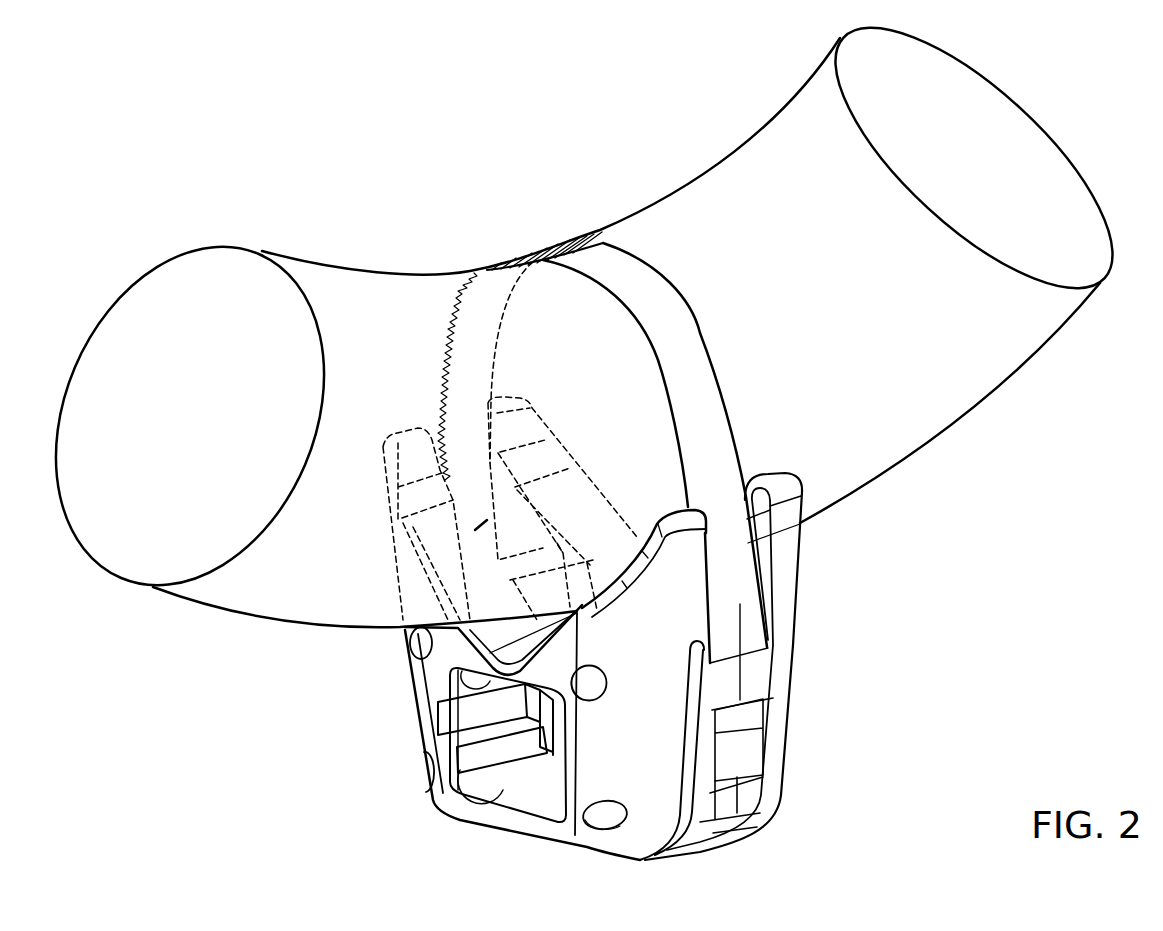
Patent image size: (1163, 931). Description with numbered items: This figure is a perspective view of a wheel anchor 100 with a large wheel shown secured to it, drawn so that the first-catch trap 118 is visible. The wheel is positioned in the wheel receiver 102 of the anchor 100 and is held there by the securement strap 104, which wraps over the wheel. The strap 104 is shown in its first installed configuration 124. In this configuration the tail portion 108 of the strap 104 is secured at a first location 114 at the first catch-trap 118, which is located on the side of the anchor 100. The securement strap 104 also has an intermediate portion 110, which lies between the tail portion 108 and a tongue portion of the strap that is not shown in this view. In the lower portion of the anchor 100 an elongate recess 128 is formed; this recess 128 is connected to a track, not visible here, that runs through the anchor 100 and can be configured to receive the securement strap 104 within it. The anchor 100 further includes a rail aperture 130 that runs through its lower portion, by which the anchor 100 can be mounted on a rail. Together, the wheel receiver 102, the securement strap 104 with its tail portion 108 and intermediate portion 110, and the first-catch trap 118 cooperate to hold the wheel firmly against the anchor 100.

The wheel anchor 100 is at (262, 108).
The wheel receiver 102 is at (604, 203).
The securement strap 104 is at (545, 241).
The tail portion 108 is at (740, 602).
The intermediate portion 110 is at (642, 280).
The first location 114 is at (740, 717).
The first-catch trap 118 is at (740, 680).
The first installed configuration 124 is at (961, 491).
The elongate recess 128 is at (742, 746).
The rail aperture 130 is at (445, 809).